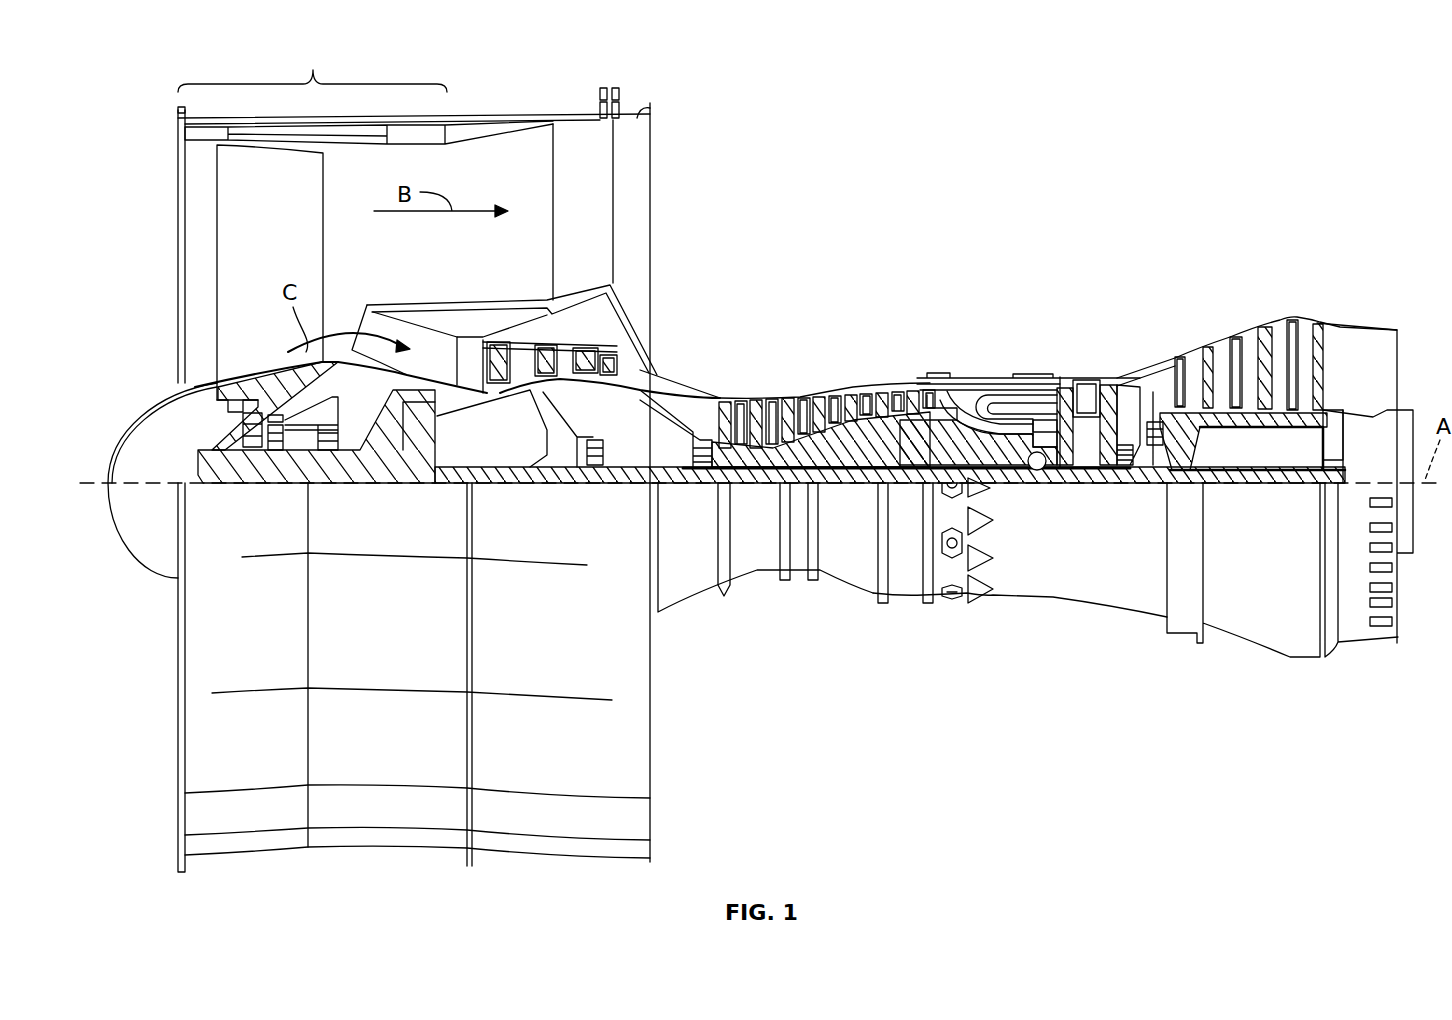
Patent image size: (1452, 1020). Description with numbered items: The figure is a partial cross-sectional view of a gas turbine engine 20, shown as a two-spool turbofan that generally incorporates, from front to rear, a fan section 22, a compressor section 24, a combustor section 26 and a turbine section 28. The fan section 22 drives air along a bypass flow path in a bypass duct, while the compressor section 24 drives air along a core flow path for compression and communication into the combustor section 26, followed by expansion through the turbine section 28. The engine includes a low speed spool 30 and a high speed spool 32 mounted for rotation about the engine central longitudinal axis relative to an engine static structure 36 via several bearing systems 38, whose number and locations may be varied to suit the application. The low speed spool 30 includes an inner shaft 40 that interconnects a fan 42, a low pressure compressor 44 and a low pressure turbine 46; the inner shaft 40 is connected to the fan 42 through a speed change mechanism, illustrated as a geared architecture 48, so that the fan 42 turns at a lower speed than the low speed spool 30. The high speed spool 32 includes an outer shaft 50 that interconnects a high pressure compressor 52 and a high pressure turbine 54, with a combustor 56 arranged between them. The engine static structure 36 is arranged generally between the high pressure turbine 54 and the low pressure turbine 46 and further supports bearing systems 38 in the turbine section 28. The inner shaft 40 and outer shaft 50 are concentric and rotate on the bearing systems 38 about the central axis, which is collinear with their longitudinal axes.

The gas turbine engine 20 is at (1280, 86).
The fan section 22 is at (395, 166).
The compressor section 24 is at (733, 338).
The combustor section 26 is at (1011, 311).
The turbine section 28 is at (1214, 326).
The low speed spool 30 is at (868, 484).
The high speed spool 32 is at (925, 425).
The engine static structure 36 is at (909, 600).
The bearing systems 38 is at (283, 440).
The inner shaft 40 is at (663, 490).
The fan 42 is at (283, 247).
The low pressure compressor 44 is at (573, 365).
The low pressure turbine 46 is at (1253, 340).
The geared architecture 48 is at (415, 455).
The outer shaft 50 is at (1040, 470).
The high pressure compressor 52 is at (830, 450).
The high pressure turbine 54 is at (1085, 380).
The combustor 56 is at (1005, 405).